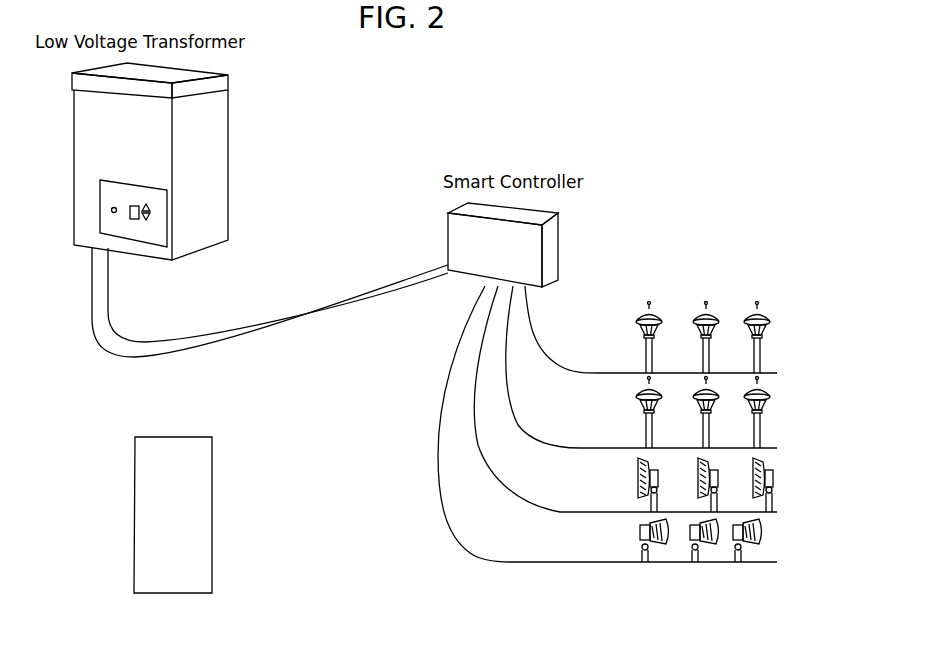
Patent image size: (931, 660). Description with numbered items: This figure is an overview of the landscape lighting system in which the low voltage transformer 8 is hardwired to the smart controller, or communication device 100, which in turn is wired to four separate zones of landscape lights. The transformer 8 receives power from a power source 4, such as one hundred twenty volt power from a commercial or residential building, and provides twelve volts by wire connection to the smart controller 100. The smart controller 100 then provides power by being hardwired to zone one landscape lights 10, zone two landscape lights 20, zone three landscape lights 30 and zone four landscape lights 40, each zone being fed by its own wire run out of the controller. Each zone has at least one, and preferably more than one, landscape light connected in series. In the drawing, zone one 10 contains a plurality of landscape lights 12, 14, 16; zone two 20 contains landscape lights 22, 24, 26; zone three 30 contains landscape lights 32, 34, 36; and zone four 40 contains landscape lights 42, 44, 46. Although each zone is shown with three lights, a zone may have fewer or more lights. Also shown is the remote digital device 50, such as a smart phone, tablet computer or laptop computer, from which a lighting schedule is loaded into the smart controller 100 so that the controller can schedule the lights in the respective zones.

The power source 4 is at (230, 172).
The transformer 8 is at (87, 128).
The smart controller/communication device 100 is at (567, 255).
The zone 1 landscape lights 10 is at (623, 340).
The landscape light 12 is at (643, 309).
The landscape light 14 is at (705, 305).
The landscape light 16 is at (770, 308).
The zone 2 landscape lights 20 is at (637, 428).
The landscape light 22 is at (661, 398).
The landscape light 24 is at (714, 398).
The landscape light 26 is at (766, 398).
The zone 3 landscape lights 30 is at (618, 472).
The landscape light 32 is at (660, 484).
The landscape light 34 is at (719, 484).
The landscape light 36 is at (780, 485).
The zone 4 landscape lights 40 is at (617, 535).
The landscape light 42 is at (642, 546).
The landscape light 44 is at (680, 546).
The landscape light 46 is at (743, 543).
The remote digital device 50 is at (202, 520).